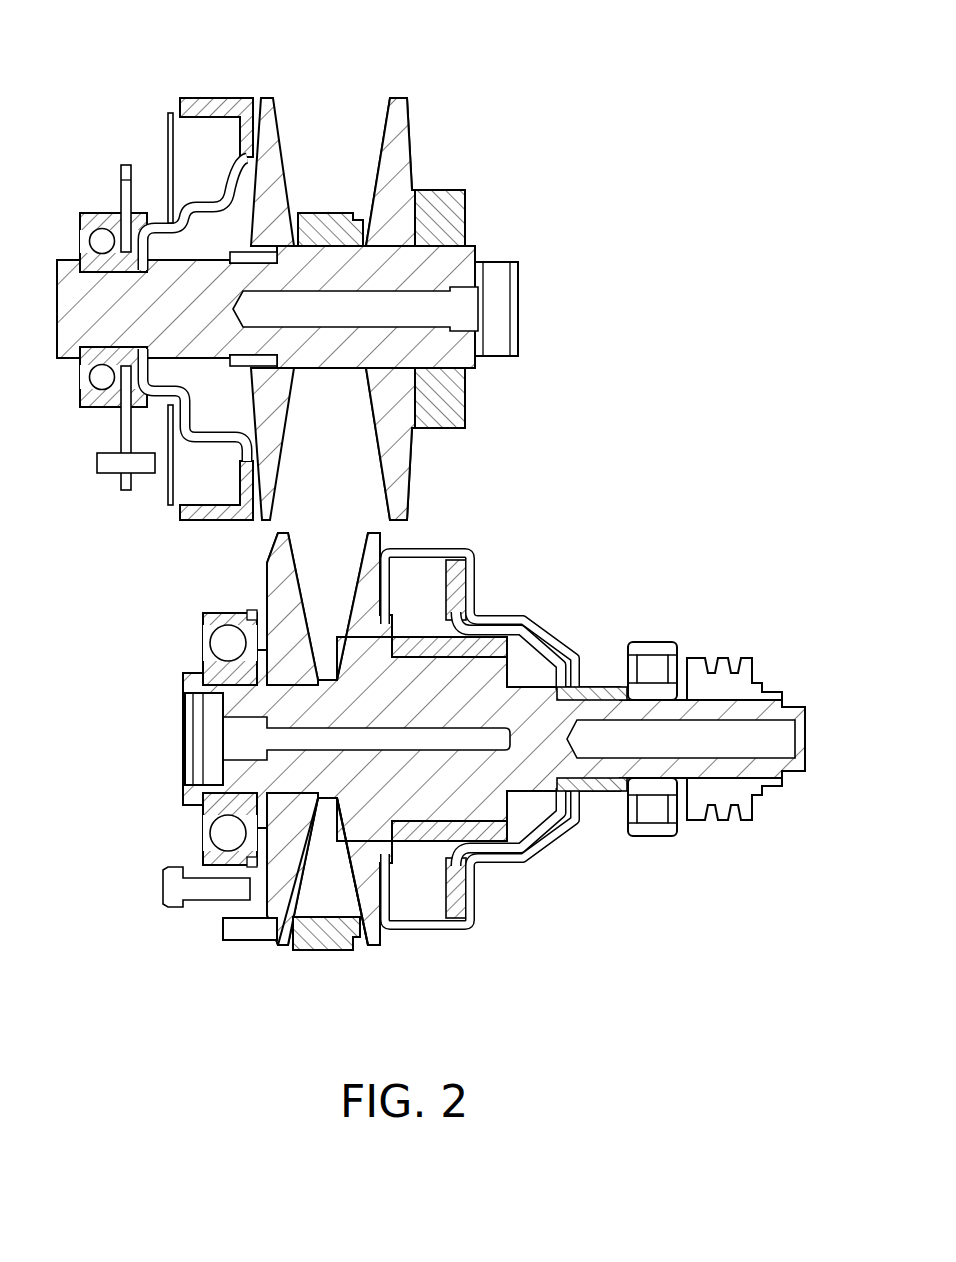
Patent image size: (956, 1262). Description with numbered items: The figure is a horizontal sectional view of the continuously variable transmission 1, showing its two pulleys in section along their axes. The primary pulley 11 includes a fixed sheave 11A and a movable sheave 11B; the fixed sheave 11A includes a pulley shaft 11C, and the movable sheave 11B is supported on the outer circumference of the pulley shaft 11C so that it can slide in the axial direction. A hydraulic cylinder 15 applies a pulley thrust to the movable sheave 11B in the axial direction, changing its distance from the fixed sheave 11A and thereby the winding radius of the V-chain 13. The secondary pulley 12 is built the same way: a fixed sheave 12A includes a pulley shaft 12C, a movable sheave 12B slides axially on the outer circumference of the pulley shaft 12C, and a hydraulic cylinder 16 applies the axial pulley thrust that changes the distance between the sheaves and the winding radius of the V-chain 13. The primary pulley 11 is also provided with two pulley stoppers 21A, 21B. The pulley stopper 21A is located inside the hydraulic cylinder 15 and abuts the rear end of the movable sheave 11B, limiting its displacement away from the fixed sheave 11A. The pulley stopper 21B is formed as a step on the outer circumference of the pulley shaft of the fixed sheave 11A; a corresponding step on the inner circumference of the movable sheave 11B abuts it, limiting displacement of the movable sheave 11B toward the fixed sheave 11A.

The power transmission device 1 is at (431, 523).
The primary pulley 11 is at (287, 273).
The fixed sheave 11A is at (400, 148).
The movable sheave 11B is at (272, 152).
The pulley shaft 11C is at (316, 236).
The secondary pulley 12 is at (484, 766).
The fixed sheave 12A is at (283, 595).
The movable sheave 12B is at (372, 560).
The pulley shaft 12C is at (327, 800).
The V-chain 13 is at (343, 212).
The hydraulic cylinder 15 is at (210, 408).
The hydraulic cylinder 16 is at (530, 680).
The pulley stopper 21A is at (157, 237).
The pulley stopper 21B is at (262, 368).